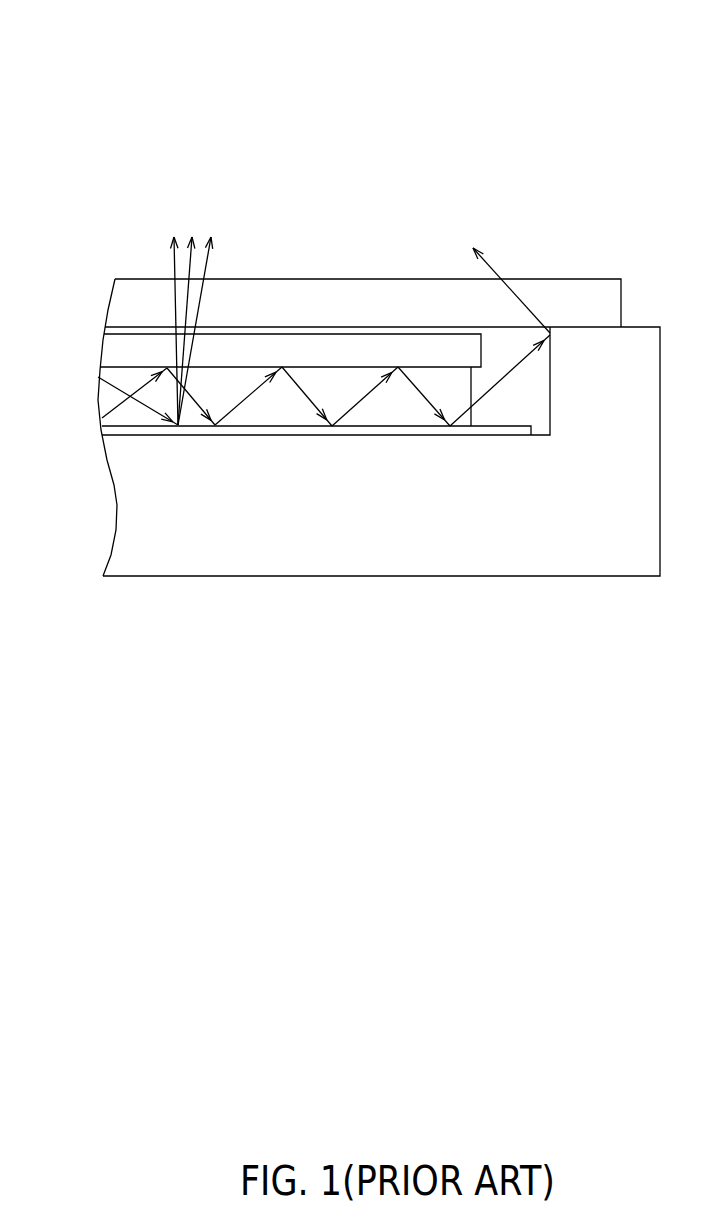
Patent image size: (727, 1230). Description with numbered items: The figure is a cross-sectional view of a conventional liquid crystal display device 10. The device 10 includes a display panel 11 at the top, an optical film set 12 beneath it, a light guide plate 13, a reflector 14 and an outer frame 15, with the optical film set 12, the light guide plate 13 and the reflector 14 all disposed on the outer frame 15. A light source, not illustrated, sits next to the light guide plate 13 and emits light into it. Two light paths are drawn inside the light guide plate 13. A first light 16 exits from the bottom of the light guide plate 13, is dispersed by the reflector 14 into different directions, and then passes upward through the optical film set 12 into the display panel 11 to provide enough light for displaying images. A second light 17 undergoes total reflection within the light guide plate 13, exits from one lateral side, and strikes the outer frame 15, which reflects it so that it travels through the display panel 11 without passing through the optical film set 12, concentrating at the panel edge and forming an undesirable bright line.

The conventional liquid crystal display device 10 is at (118, 44).
The display panel 11 is at (120, 300).
The optical film set 12 is at (118, 346).
The light guide plate 13 is at (131, 418).
The reflector 14 is at (165, 428).
The outer frame 15 is at (132, 530).
The first light 16 is at (110, 387).
The second light 17 is at (105, 409).